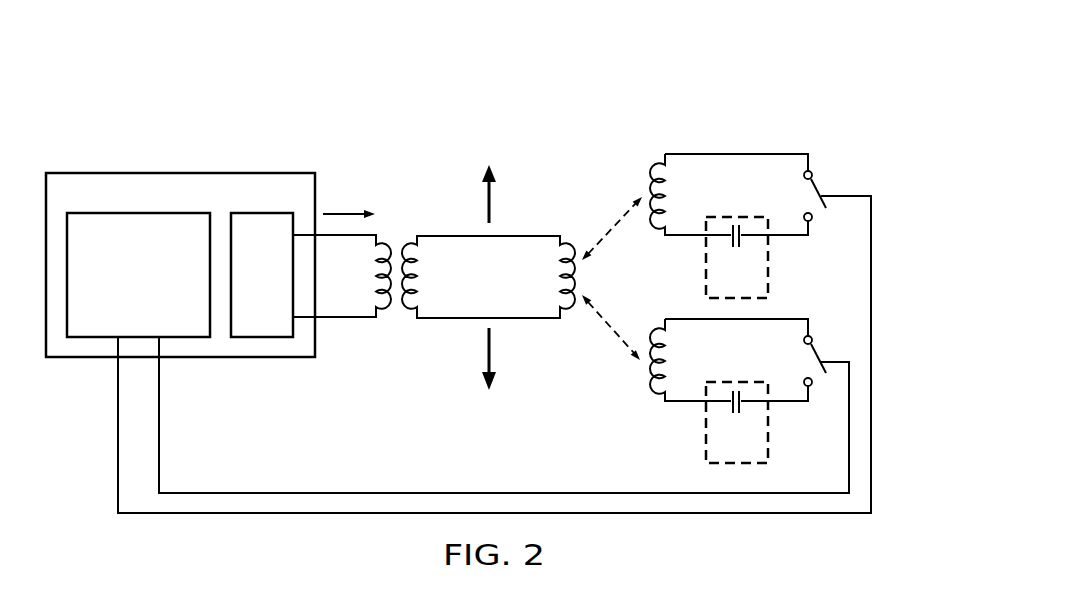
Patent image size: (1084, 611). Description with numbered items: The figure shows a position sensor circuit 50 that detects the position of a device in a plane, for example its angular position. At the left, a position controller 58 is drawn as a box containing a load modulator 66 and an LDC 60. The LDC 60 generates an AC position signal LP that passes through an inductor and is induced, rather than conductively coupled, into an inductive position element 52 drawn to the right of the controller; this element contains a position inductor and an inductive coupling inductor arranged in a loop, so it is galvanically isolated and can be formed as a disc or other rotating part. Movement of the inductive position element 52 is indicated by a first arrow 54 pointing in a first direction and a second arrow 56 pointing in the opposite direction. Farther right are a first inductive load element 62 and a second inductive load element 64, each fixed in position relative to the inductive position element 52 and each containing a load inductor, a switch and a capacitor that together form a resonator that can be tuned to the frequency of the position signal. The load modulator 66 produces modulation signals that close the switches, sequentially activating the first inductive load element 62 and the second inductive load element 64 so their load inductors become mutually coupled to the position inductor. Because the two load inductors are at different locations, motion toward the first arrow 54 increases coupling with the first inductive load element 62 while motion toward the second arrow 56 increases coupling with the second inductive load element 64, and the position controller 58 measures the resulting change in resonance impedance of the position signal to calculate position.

The position sensor circuit 50 is at (152, 85).
The position controller 58 is at (175, 165).
The load modulator 66 is at (152, 319).
The LDC 60 is at (277, 306).
The inductive position element 52 is at (418, 189).
The first arrow 54 is at (491, 203).
The second arrow 56 is at (491, 347).
The first inductive load element 62 is at (790, 129).
The second inductive load element 64 is at (807, 294).